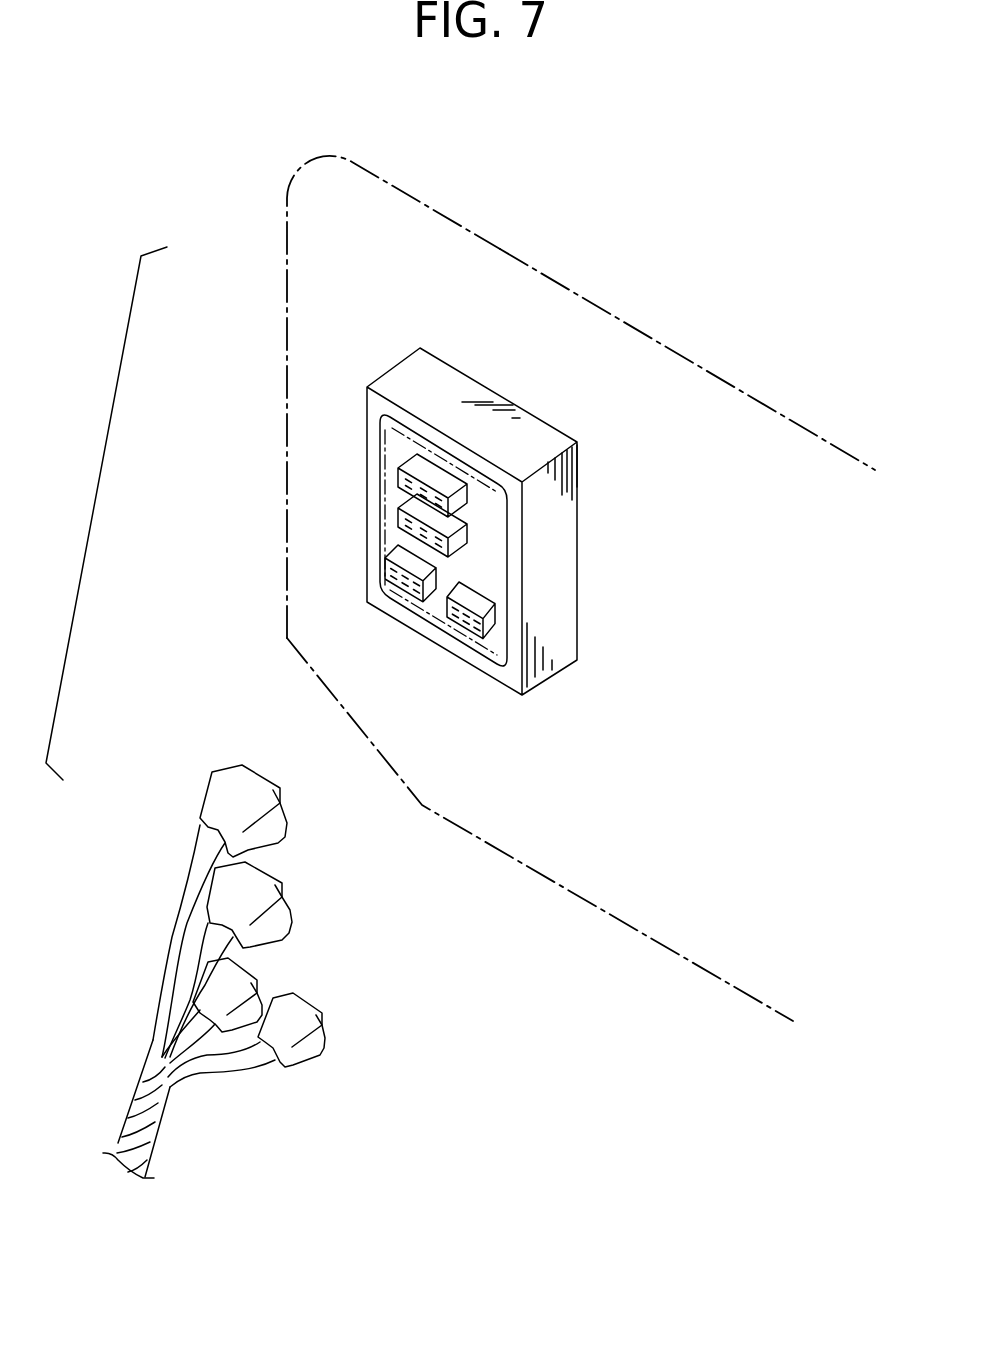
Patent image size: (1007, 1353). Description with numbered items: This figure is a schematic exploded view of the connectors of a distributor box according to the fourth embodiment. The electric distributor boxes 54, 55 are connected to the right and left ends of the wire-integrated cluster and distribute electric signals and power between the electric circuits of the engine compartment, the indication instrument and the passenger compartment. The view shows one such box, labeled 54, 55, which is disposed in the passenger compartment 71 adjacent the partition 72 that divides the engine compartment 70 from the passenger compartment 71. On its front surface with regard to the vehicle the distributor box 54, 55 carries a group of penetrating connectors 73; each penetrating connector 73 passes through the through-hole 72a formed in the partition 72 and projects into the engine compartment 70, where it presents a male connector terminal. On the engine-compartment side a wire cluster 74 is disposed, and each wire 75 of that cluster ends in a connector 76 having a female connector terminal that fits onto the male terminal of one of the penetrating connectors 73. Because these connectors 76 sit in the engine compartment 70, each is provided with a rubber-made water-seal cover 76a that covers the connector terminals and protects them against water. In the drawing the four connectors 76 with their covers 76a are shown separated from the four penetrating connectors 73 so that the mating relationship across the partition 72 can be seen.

The electric distributor box 54 is at (457, 392).
The electric distributor box 55 is at (552, 566).
The engine compartment 70 is at (278, 710).
The passenger compartment 71 is at (495, 228).
The partition 72 is at (608, 315).
The through-hole 72a is at (378, 448).
The penetrating connector 73 is at (398, 475).
The wire cluster 74 is at (157, 1127).
The wire 75 is at (180, 890).
The connector 76 is at (254, 772).
The water-seal cover 76a is at (227, 803).